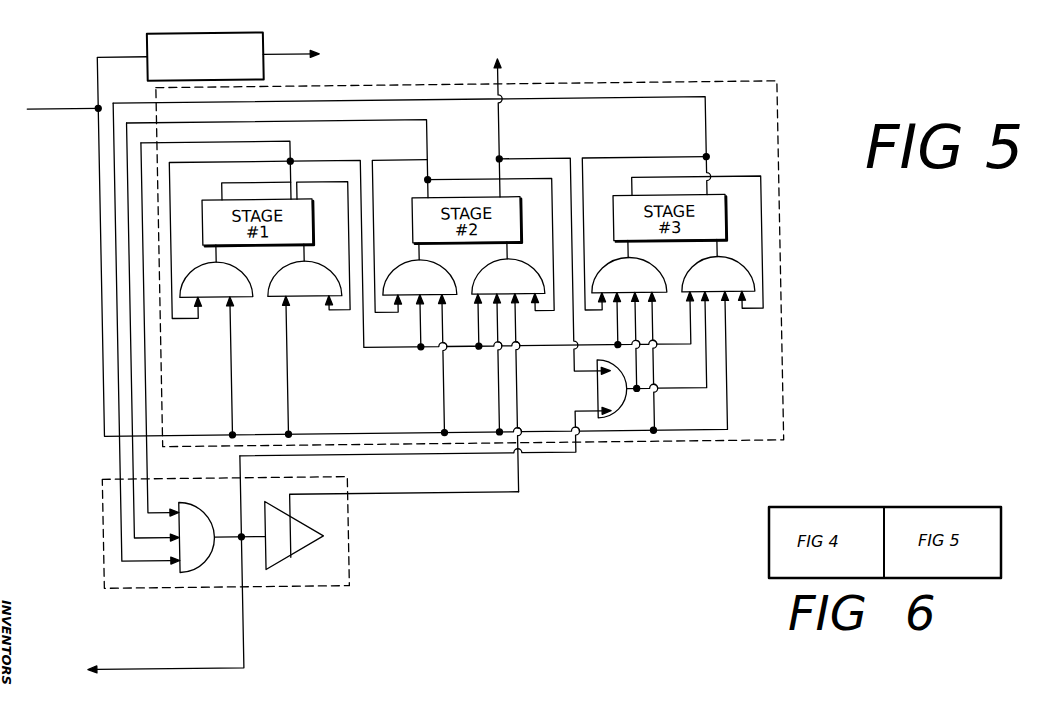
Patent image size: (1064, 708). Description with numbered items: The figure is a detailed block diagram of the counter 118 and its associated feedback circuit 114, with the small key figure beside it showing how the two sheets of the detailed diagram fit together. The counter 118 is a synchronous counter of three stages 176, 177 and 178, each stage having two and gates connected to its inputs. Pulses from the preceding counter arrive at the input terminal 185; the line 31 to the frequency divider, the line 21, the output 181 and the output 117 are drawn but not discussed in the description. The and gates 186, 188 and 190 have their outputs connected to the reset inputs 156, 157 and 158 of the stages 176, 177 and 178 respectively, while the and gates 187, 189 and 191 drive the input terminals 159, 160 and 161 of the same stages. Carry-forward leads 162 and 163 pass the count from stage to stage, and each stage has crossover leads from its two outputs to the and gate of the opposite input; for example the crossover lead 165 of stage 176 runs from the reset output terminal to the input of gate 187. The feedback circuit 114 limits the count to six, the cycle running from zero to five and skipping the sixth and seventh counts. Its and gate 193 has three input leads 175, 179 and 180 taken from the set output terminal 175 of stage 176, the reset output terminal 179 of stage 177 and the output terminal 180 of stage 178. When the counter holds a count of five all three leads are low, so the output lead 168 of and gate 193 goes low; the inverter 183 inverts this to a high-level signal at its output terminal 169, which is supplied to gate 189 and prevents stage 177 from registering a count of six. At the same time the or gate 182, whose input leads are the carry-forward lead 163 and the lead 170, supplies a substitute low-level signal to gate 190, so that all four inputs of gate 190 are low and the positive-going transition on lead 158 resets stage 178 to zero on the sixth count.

The input line to frequency divider 31 is at (100, 56).
The input terminal 185 is at (48, 105).
The clock bus line 21 is at (174, 433).
The input lead 175 is at (294, 150).
The input lead 179 is at (431, 131).
The input lead 180 is at (147, 560).
The crossover lead 165 is at (230, 181).
The first stage 176 is at (345, 203).
The second stage 177 is at (421, 197).
The third stage 178 is at (755, 204).
The carry-forward lead 163 is at (546, 158).
The output line 181 is at (504, 67).
The counter 118 is at (784, 271).
The reset input 156 is at (215, 252).
The and gate 186 is at (241, 270).
The and gate 187 is at (281, 270).
The input terminal 159 is at (305, 252).
The reset input 157 is at (418, 252).
The and gate 188 is at (443, 270).
The and gate 189 is at (479, 270).
The input terminal 160 is at (509, 250).
The reset input 158 is at (627, 251).
The and gate 190 is at (652, 259).
The and gate 191 is at (687, 268).
The input terminal 161 is at (717, 250).
The carry-forward lead 162 is at (381, 349).
The or gate 182 is at (626, 405).
The input lead 170 is at (558, 455).
The output terminal 169 is at (383, 494).
The and gate 193 is at (203, 515).
The inverter 183 is at (316, 518).
The output lead 168 is at (228, 544).
The feedback circuit 114 is at (352, 580).
The output line 117 is at (115, 666).